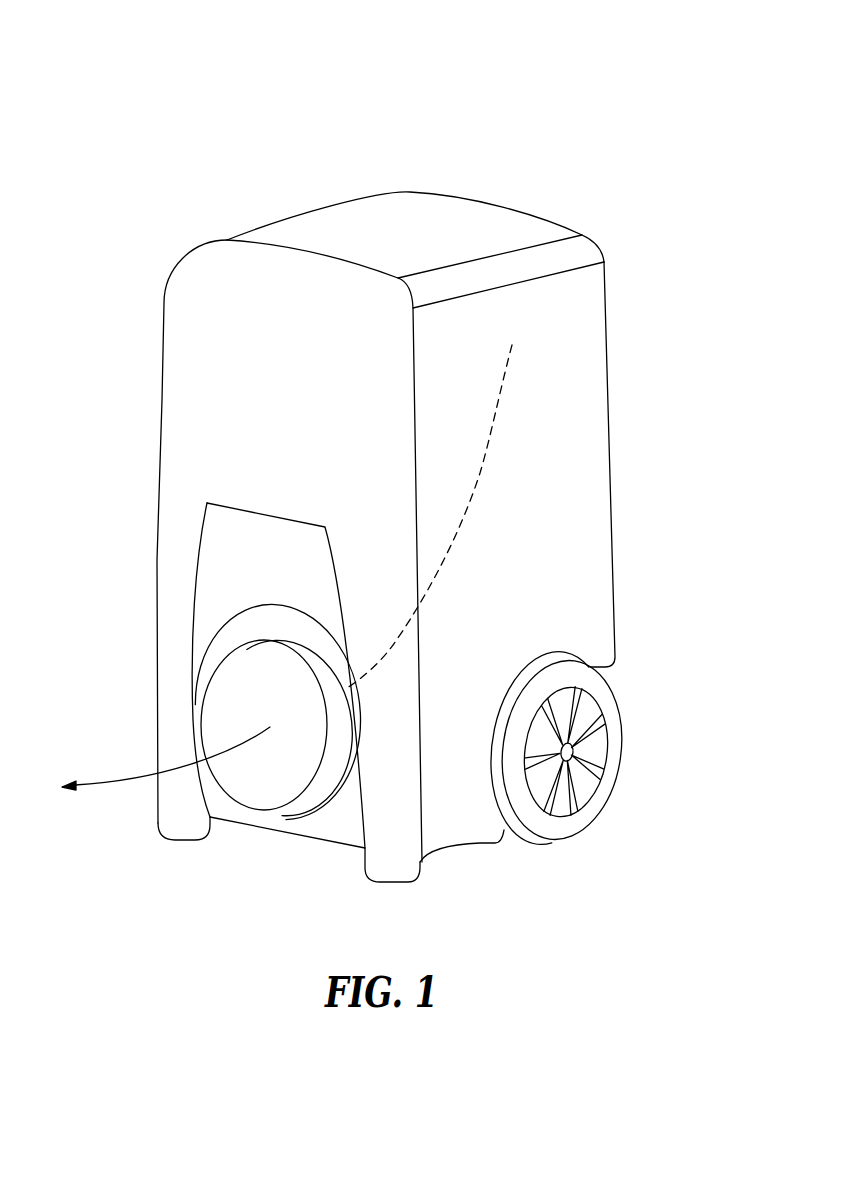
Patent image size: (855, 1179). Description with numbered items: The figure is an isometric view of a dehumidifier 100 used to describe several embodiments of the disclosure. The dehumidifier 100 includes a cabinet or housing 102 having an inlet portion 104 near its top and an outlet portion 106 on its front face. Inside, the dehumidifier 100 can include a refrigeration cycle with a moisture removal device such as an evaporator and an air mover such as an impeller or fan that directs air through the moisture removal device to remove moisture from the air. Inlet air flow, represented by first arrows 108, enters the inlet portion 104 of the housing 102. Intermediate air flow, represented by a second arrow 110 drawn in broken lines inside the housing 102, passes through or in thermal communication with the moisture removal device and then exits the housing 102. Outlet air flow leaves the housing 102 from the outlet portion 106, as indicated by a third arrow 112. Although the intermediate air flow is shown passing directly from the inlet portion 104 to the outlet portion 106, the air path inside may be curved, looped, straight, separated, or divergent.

The dehumidifier 100 is at (638, 106).
The housing 102 is at (180, 362).
The inlet portion 104 is at (525, 278).
The outlet portion 106 is at (287, 816).
The first arrows 108 is at (320, 83).
The second arrow 110 is at (480, 473).
The third arrow 112 is at (118, 775).